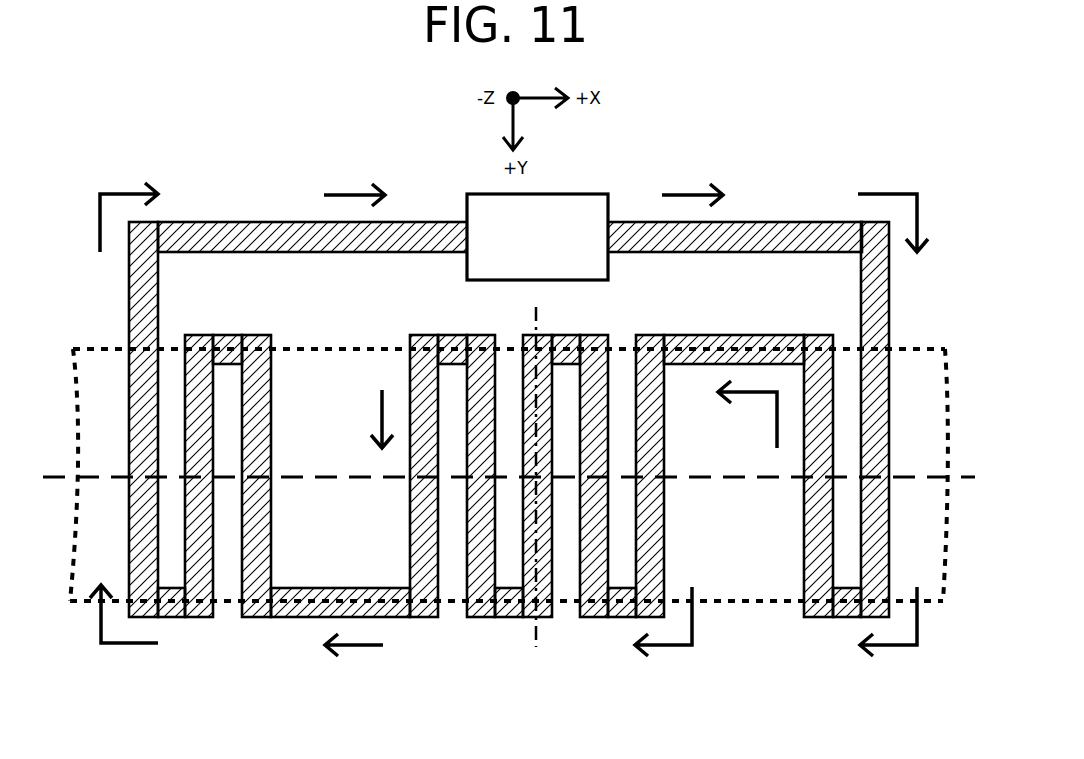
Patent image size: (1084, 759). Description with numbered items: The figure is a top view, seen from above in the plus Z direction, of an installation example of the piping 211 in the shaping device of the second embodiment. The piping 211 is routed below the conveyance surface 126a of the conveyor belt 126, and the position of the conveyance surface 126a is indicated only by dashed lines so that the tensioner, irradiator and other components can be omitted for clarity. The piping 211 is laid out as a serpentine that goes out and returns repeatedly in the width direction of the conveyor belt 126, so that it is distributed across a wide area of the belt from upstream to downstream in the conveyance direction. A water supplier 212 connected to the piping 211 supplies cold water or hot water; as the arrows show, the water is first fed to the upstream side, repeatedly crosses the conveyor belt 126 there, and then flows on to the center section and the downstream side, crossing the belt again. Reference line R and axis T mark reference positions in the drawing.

The piping 211 is at (263, 222).
The water supplier 212 is at (579, 194).
The conveyor belt 126 is at (383, 349).
The conveyance surface 126a is at (298, 370).
The row direction reference line R is at (349, 477).
The center line / axis T is at (536, 474).